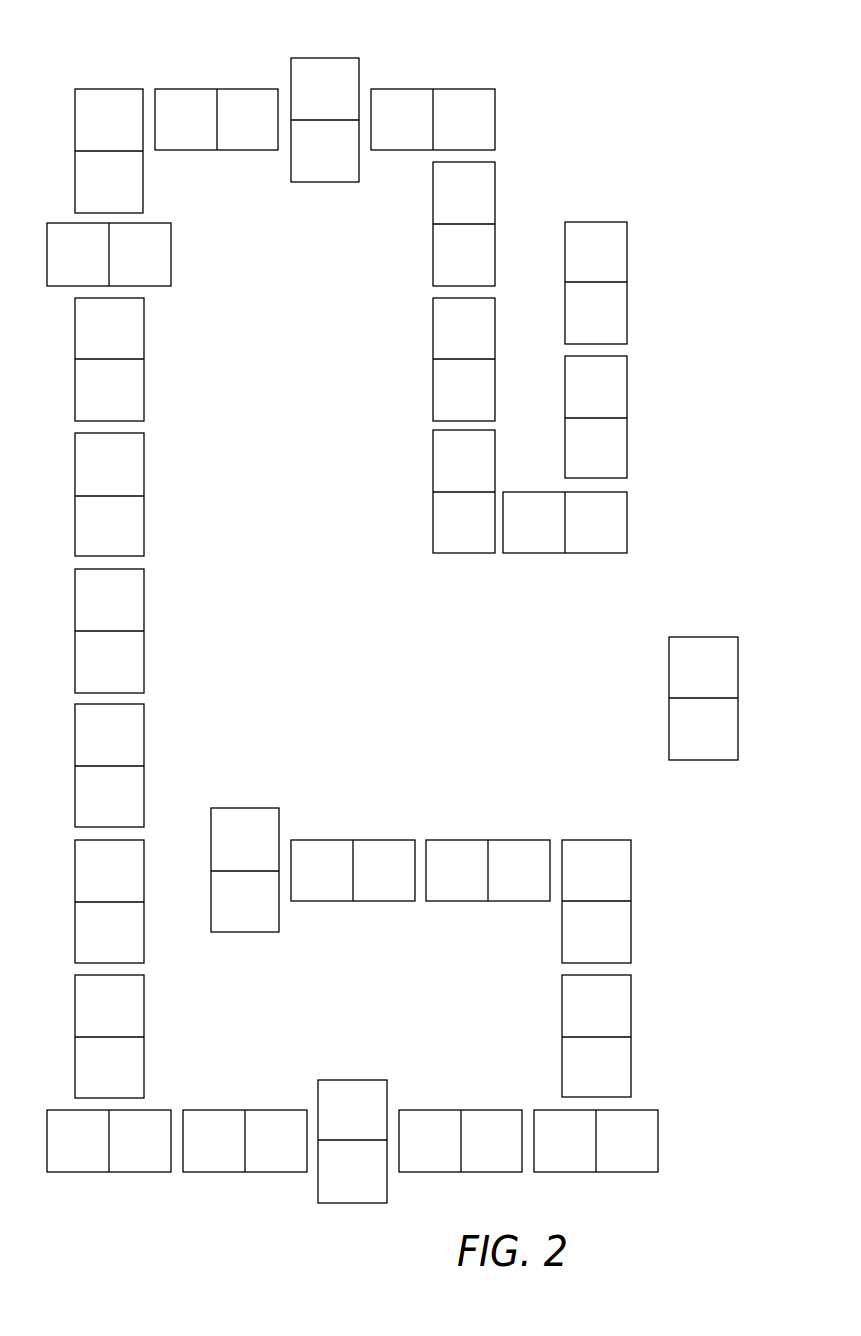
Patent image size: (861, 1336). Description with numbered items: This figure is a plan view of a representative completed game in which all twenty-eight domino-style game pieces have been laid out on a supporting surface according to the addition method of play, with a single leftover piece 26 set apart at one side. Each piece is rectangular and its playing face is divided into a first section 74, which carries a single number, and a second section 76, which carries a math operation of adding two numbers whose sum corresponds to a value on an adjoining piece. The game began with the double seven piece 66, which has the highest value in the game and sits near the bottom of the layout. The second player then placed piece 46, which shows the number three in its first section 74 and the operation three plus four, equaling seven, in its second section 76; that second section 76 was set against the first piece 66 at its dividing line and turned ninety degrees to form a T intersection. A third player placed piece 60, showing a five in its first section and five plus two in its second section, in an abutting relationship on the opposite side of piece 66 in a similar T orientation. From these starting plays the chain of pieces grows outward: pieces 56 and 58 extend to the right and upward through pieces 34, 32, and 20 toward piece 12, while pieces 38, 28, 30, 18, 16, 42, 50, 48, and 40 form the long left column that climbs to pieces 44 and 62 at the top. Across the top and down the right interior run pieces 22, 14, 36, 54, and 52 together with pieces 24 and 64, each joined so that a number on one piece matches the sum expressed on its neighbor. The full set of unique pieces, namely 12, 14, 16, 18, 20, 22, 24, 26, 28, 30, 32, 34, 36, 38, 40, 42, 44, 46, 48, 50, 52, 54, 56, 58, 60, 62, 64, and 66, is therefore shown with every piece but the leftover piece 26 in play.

The game piece 12 is at (247, 807).
The game piece 14 is at (497, 192).
The game piece 16 is at (145, 591).
The game piece 18 is at (145, 724).
The game piece 20 is at (333, 838).
The game piece 22 is at (461, 87).
The game piece 24 is at (628, 250).
The leftover game piece 26 is at (703, 636).
The game piece 28 is at (145, 998).
The game piece 30 is at (145, 866).
The game piece 32 is at (474, 838).
The game piece 34 is at (634, 862).
The game piece 36 is at (496, 316).
The game piece 38 is at (160, 1108).
The game piece 40 is at (112, 88).
The game piece 42 is at (145, 456).
The game piece 44 is at (193, 88).
The game piece 46 is at (245, 1151).
The game piece 48 is at (157, 223).
The game piece 50 is at (145, 329).
The game piece 52 is at (628, 521).
The game piece 54 is at (496, 448).
The game piece 56 is at (643, 1108).
The game piece 58 is at (634, 996).
The game piece 60 is at (424, 1108).
The game piece 62 is at (328, 56).
The game piece 64 is at (628, 386).
The double seven game piece 66 is at (354, 1078).
The first section 74 is at (216, 1160).
The second section 76 is at (260, 1160).